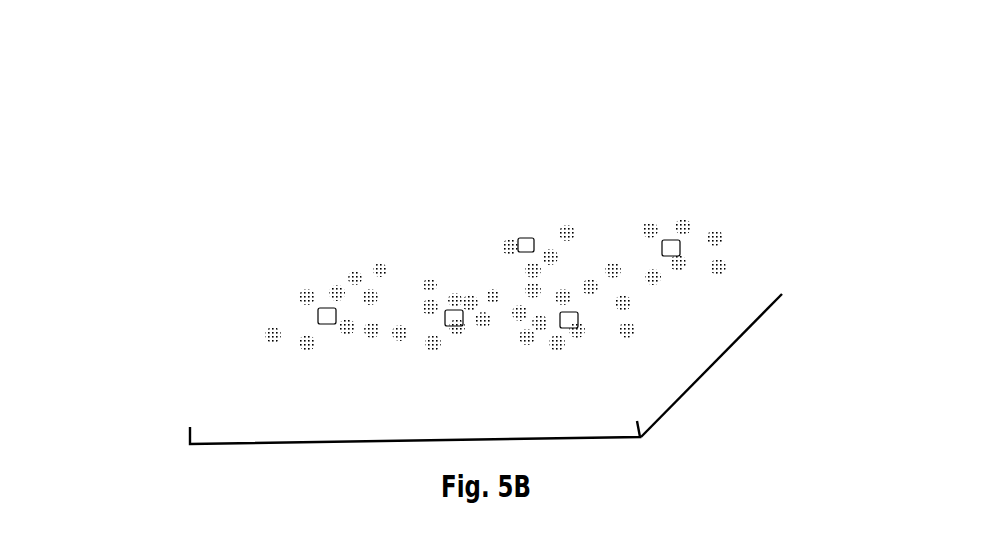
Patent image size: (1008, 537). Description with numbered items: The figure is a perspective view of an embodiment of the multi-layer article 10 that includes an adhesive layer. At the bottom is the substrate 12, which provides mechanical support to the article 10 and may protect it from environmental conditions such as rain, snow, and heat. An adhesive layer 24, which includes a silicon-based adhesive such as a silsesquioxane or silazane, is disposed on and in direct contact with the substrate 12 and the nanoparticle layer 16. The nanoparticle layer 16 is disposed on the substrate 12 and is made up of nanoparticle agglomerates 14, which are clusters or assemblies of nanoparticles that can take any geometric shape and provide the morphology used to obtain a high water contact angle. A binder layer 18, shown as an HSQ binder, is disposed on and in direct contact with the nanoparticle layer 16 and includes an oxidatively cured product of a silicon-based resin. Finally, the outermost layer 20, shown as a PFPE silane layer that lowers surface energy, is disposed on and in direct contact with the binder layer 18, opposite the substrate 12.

The article 10 is at (130, 221).
The substrate 12 is at (681, 384).
The nanoparticle agglomerates 14 is at (273, 302).
The nanoparticle layer 16 is at (752, 223).
The binder layer 18 is at (769, 111).
The outermost layer 20 is at (790, 30).
The adhesive layer 24 is at (770, 274).